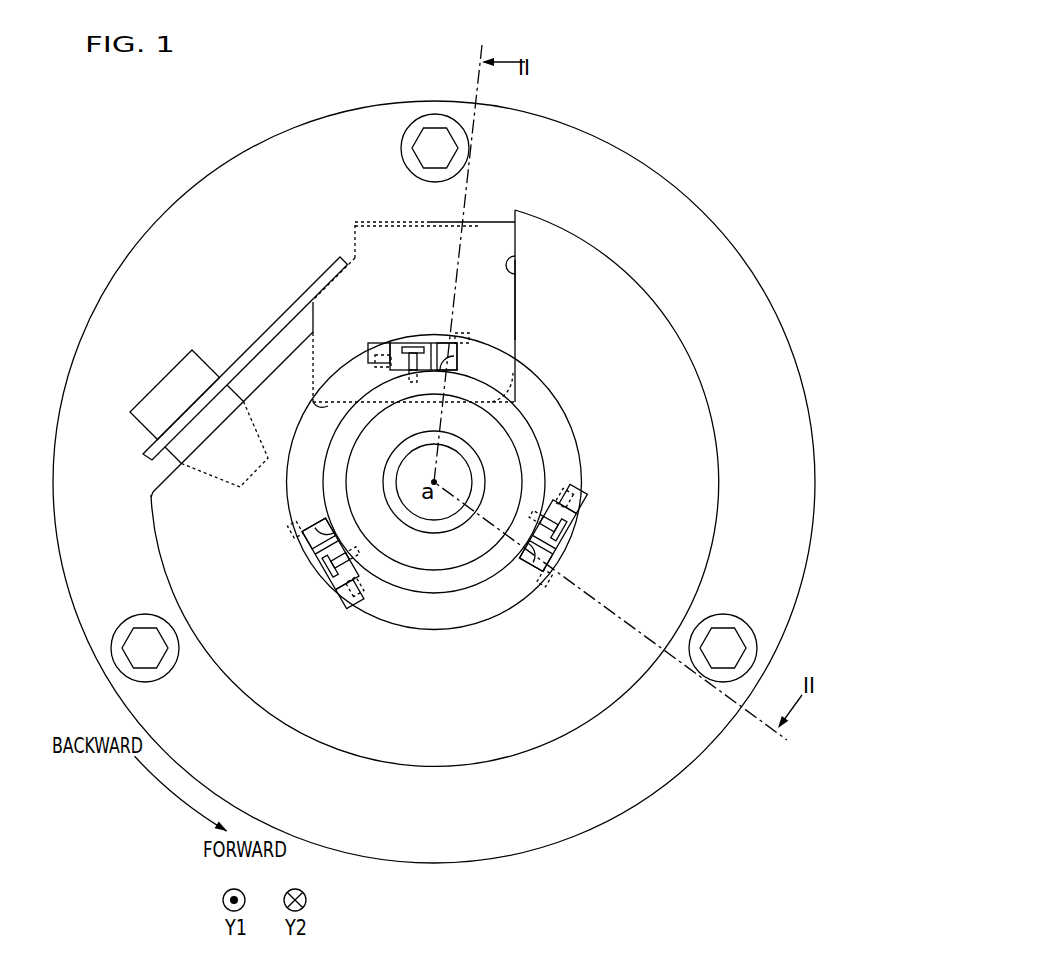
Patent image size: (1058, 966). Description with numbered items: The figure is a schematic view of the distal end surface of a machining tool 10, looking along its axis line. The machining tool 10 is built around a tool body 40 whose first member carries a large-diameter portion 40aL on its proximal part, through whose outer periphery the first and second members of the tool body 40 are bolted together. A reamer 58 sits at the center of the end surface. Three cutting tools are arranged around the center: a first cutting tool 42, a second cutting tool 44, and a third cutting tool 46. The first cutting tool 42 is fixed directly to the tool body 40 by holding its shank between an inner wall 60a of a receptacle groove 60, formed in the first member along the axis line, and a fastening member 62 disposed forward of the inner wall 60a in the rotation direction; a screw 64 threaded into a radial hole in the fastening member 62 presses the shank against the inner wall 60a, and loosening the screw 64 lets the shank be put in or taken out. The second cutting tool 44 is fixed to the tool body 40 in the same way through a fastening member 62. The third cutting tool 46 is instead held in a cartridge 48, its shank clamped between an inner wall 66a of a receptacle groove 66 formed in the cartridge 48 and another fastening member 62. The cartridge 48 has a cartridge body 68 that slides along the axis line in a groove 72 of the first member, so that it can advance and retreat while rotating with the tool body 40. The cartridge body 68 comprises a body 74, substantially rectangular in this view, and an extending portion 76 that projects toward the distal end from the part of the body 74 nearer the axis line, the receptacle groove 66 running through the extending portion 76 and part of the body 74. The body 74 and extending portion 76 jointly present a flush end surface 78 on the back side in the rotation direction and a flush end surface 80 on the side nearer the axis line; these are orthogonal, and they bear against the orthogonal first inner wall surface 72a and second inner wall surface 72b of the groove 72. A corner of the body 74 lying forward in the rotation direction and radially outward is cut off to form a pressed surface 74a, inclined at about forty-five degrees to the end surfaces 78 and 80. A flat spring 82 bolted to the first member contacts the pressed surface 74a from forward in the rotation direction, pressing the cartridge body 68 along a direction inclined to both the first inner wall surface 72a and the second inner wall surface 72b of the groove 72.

The machining tool 10 is at (732, 62).
The tool body 40 is at (495, 732).
The large-diameter portion 40aL is at (615, 797).
The first cutting tool 42 is at (560, 557).
The second cutting tool 44 is at (300, 550).
The third cutting tool 46 is at (457, 362).
The cartridge 48 is at (373, 228).
The reamer 58 is at (455, 473).
The receptacle groove 60 is at (560, 503).
The inner wall 60a is at (547, 577).
The fastening member 62 is at (397, 343).
The screw 64 is at (408, 343).
The receptacle groove 66 is at (428, 343).
The inner wall 66a is at (448, 338).
The cartridge body 68 is at (443, 227).
The groove 72 is at (515, 240).
The first inner wall surface 72a is at (518, 277).
The second inner wall surface 72b is at (520, 374).
The body 74 is at (387, 232).
The pressed surface 74a is at (333, 277).
The extending portion 76 is at (380, 362).
The end surface 78 is at (517, 303).
The end surface 80 is at (312, 407).
The flat spring 82 is at (253, 353).